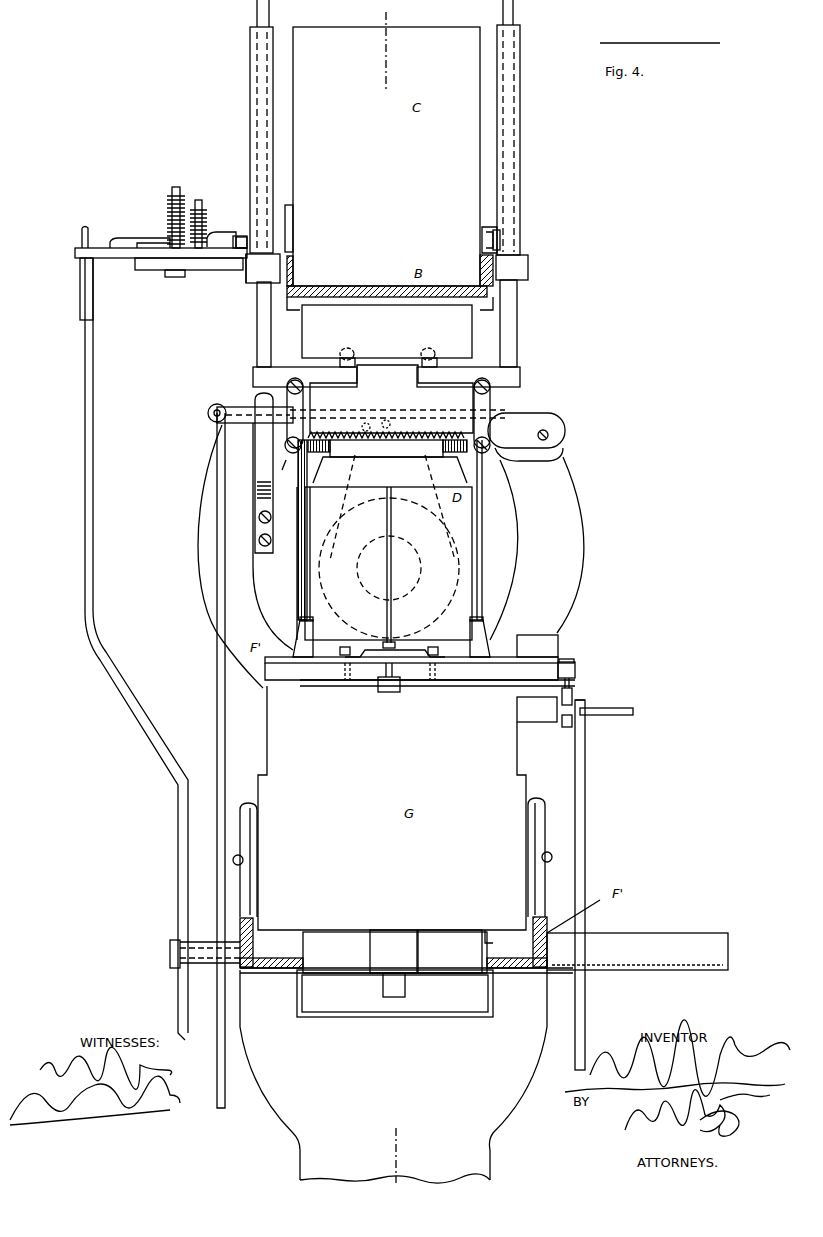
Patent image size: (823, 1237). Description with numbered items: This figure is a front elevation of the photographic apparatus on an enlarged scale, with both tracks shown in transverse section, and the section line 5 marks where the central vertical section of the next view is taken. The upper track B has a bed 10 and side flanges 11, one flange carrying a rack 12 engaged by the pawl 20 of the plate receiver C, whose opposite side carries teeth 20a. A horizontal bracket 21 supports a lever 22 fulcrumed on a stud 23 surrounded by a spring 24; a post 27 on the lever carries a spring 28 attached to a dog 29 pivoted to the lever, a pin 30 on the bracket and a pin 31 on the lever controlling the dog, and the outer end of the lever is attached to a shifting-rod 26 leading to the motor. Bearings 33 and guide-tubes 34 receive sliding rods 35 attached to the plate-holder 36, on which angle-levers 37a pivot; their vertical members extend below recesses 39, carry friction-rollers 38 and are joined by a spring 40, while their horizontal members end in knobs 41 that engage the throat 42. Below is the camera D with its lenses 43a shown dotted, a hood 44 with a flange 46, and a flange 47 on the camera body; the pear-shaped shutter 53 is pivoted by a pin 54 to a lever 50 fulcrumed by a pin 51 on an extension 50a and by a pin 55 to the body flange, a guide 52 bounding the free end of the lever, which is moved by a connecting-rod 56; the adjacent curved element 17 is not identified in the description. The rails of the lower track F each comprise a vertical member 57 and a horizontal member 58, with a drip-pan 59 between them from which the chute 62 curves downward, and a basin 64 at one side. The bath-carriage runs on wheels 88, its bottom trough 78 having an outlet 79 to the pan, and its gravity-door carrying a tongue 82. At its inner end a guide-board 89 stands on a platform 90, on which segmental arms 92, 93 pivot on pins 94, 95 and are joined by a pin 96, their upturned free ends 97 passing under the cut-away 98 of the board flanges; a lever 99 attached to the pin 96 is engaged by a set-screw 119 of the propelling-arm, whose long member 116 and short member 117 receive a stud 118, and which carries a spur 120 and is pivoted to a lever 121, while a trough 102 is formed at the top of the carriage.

The section line 5 is at (397, 599).
The rod 35 is at (257, 13).
The guide-tube 34 is at (257, 90).
The bed 10 is at (384, 289).
The side flange 11 is at (294, 272).
The teeth 20a is at (294, 226).
The pawl 20 is at (498, 234).
The rack 12 is at (500, 251).
The guide or bearing 33 is at (540, 268).
The pin 30 is at (250, 258).
The pin 31 is at (250, 240).
The lever 22 is at (100, 260).
The horizontal bracket 21 is at (225, 263).
The stud 23 is at (181, 186).
The post 27 is at (201, 208).
The spring 24 is at (167, 225).
The spring 28 is at (214, 233).
The dog 29 is at (241, 237).
The throat 42 is at (390, 327).
The knob or projection 41 is at (350, 357).
The elbow or angle lever 37a is at (265, 389).
The pin 55 is at (365, 412).
The plate-holder 36 is at (388, 430).
The pin 54 is at (402, 432).
The recess 39 is at (306, 432).
The spring 40 is at (428, 460).
The hood 44 is at (348, 460).
The friction-roller 38 is at (296, 470).
The guide-board 89 is at (309, 536).
The shutter 53 is at (450, 515).
The lens 43a is at (405, 560).
The flange 46 is at (263, 612).
The flange 47 is at (215, 598).
The arm 17 is at (572, 537).
The lever 50 is at (528, 421).
The fulcrum-pin 51 is at (550, 435).
The extension 50a is at (555, 450).
The guide 52 is at (262, 463).
The connecting-rod 56 is at (217, 695).
The shifting-rod 26 is at (95, 483).
The free end 97 is at (297, 633).
The cut-away 98 is at (311, 619).
The segmental arm 92 is at (340, 657).
The pivot-pin 94 is at (348, 648).
The connecting pin 96 is at (393, 646).
The pivot-pin 95 is at (433, 647).
The segmental arm 93 is at (440, 657).
The horizontal platform 90 is at (337, 685).
The lever 99 is at (470, 687).
The trough 102 is at (537, 651).
The set-screw 119 is at (577, 670).
The upper long member 116 is at (575, 696).
The spur 120 is at (633, 711).
The lower short member 117 is at (565, 728).
The stud 118 is at (585, 722).
The lever 121 is at (586, 838).
The basin 64 is at (640, 967).
The wheel 88 is at (252, 803).
The vertical member 57 is at (253, 950).
The trough 78 is at (393, 951).
The tongue 82 is at (450, 951).
The horizontal member 58 is at (268, 973).
The outlet 79 is at (382, 990).
The pan 59 is at (390, 1017).
The chute 62 is at (393, 1076).